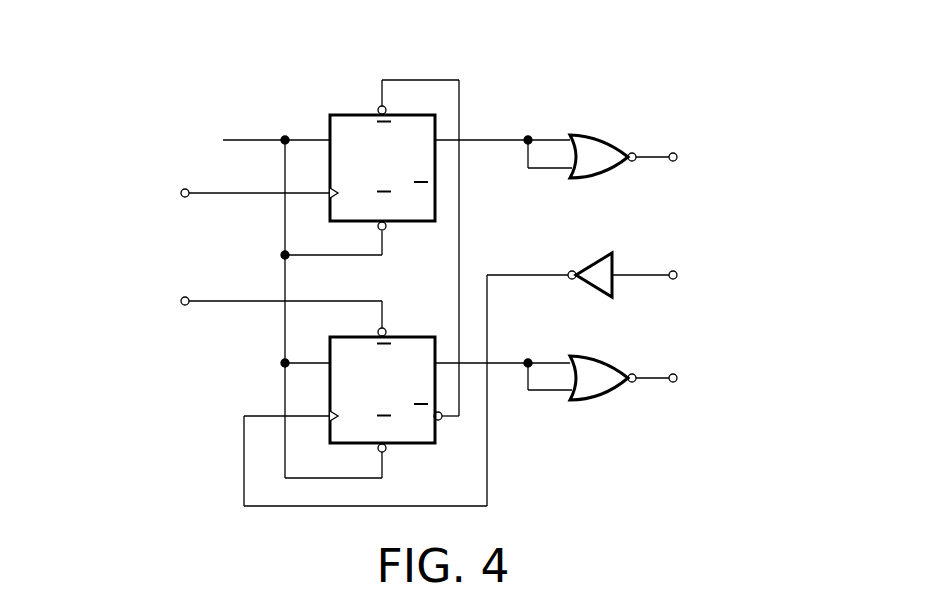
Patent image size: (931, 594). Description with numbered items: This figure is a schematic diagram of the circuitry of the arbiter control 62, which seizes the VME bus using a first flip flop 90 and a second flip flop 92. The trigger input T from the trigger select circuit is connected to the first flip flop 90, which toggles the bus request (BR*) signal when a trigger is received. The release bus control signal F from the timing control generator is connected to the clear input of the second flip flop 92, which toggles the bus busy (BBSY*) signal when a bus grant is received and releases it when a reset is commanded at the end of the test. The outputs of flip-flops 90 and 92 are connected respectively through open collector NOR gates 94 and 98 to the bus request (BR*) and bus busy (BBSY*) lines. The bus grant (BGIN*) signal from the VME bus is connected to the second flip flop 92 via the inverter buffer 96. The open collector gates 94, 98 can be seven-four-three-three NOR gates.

The arbiter control circuit 62 is at (411, 40).
The first flip flop 90 is at (408, 223).
The second flip flop 92 is at (410, 445).
The open collector NOR gate 94 is at (592, 133).
The inverter buffer 96 is at (590, 256).
The open collector NOR gate 98 is at (592, 355).